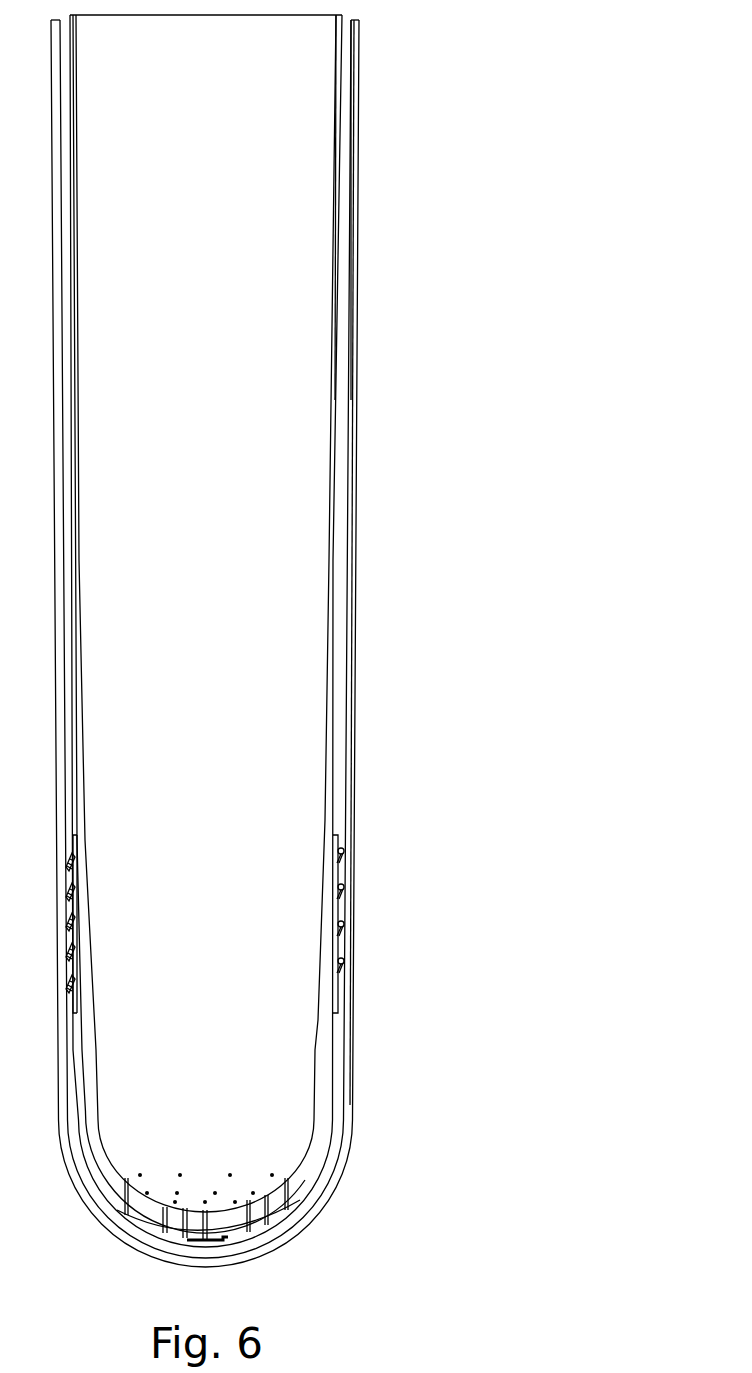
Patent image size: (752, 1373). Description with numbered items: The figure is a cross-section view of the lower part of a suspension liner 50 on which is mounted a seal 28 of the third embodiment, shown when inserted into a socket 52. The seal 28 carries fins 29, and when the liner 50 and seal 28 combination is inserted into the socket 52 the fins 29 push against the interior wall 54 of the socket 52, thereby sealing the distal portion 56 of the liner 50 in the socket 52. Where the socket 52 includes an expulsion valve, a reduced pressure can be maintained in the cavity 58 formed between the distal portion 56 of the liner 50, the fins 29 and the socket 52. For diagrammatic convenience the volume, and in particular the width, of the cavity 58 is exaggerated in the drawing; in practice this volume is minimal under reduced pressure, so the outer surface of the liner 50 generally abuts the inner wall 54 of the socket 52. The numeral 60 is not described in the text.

The seal 28 is at (340, 863).
The fins 29 is at (72, 862).
The suspension liner 50 is at (337, 70).
The socket 52 is at (355, 38).
The interior wall 54 is at (60, 177).
The distal portion 56 is at (322, 1112).
The cavity 58 is at (338, 1137).
The outer shell 60 is at (297, 1238).